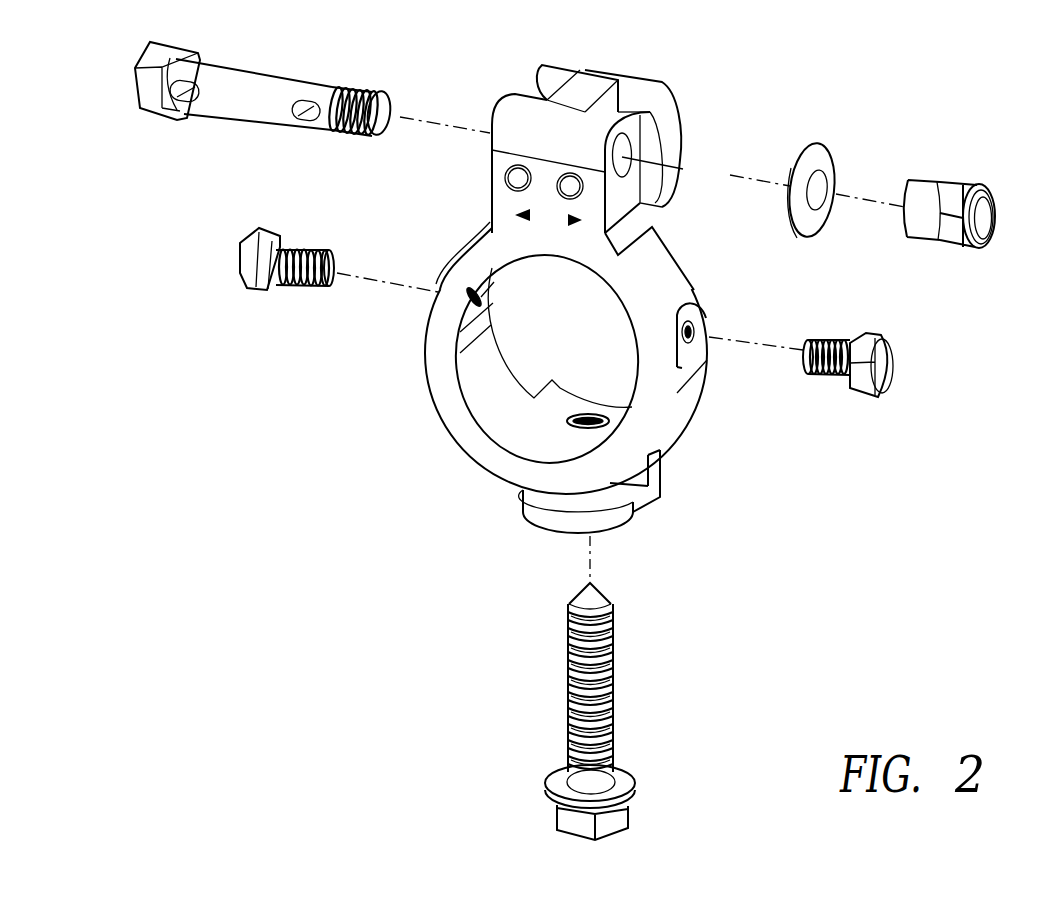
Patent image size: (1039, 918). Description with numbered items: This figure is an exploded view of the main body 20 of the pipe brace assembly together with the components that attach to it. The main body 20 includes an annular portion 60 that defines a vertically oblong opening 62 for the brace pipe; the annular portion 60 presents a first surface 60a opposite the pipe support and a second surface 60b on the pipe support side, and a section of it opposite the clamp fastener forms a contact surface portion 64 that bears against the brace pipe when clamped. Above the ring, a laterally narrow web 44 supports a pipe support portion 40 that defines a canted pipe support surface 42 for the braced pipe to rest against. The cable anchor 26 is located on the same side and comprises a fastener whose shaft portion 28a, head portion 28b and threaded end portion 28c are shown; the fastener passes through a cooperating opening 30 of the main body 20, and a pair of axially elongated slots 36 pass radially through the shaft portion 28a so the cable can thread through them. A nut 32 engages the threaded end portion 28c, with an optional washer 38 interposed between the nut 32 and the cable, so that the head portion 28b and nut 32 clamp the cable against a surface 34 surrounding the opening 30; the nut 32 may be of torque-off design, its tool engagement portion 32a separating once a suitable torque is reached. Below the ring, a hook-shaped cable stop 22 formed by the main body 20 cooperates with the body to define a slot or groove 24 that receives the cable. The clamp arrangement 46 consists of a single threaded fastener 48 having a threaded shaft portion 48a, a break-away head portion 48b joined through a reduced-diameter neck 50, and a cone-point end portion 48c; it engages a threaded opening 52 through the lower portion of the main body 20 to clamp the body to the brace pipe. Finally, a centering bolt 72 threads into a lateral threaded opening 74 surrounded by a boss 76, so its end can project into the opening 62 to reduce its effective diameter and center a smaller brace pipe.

The main body 20 is at (730, 58).
The cable stop 22 is at (640, 513).
The slot or groove 24 is at (640, 481).
The cable anchor 26 is at (500, 85).
The shaft portion 28a is at (246, 78).
The head portion 28b is at (150, 58).
The threaded end portion 28c is at (356, 95).
The opening 30 is at (622, 167).
The nut 32 is at (955, 217).
The tool engagement portion 32a is at (950, 253).
The surface 34 is at (627, 128).
The slots 36 is at (190, 97).
The washer 38 is at (820, 150).
The pipe support portion 40 is at (617, 57).
The pipe support surface 42 is at (675, 97).
The web 44 is at (582, 86).
The clamp arrangement 46 is at (504, 683).
The threaded fastener 48 is at (606, 703).
The threaded shaft portion 48a is at (615, 656).
The head portion 48b is at (618, 826).
The end portion 48c is at (586, 592).
The reduced-diameter neck 50 is at (608, 778).
The threaded opening 52 is at (590, 412).
The annular portion 60 is at (447, 383).
The first surface 60a is at (657, 413).
The second surface 60b is at (712, 354).
The opening 62 is at (483, 412).
The contact surface portion 64 is at (553, 258).
The centering bolts 72 is at (838, 329).
The threaded openings 74 is at (693, 330).
The bosses 76 is at (694, 313).